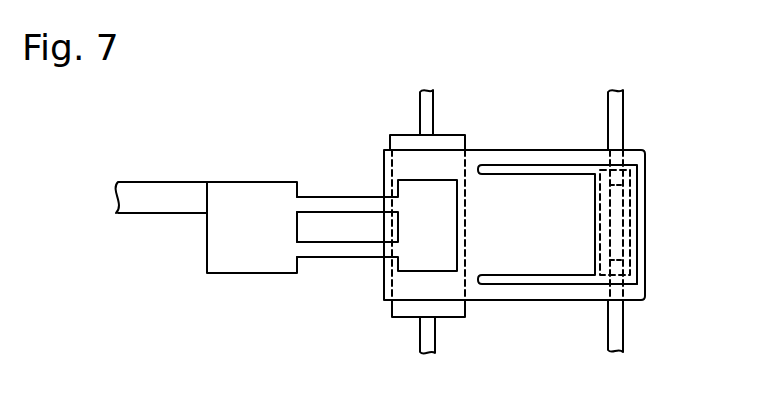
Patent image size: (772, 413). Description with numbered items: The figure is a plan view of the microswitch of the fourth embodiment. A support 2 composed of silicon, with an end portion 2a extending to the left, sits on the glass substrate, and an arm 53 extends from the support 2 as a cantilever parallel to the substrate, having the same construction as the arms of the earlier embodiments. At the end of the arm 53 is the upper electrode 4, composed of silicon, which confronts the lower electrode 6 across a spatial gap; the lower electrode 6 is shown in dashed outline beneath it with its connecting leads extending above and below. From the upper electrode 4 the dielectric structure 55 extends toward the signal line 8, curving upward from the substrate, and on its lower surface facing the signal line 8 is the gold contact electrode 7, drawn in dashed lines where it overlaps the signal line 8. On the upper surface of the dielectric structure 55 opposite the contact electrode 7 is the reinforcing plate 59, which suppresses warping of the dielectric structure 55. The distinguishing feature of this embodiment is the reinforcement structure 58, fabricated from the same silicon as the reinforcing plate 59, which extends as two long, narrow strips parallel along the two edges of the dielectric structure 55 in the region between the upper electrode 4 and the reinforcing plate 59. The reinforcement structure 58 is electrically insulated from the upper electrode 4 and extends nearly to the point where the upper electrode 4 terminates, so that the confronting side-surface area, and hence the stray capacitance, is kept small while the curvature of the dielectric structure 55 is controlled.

The shaft 2a is at (160, 182).
The support 2 is at (250, 182).
The arm 53 is at (339, 197).
The upper electrode 4 is at (428, 184).
The lower electrode 6 is at (453, 134).
The reinforcement structure 58 is at (539, 166).
The signal line 8 is at (625, 123).
The contact electrode 7 is at (623, 198).
The dielectric structure 55 is at (645, 237).
The reinforcing plate 59 is at (637, 267).